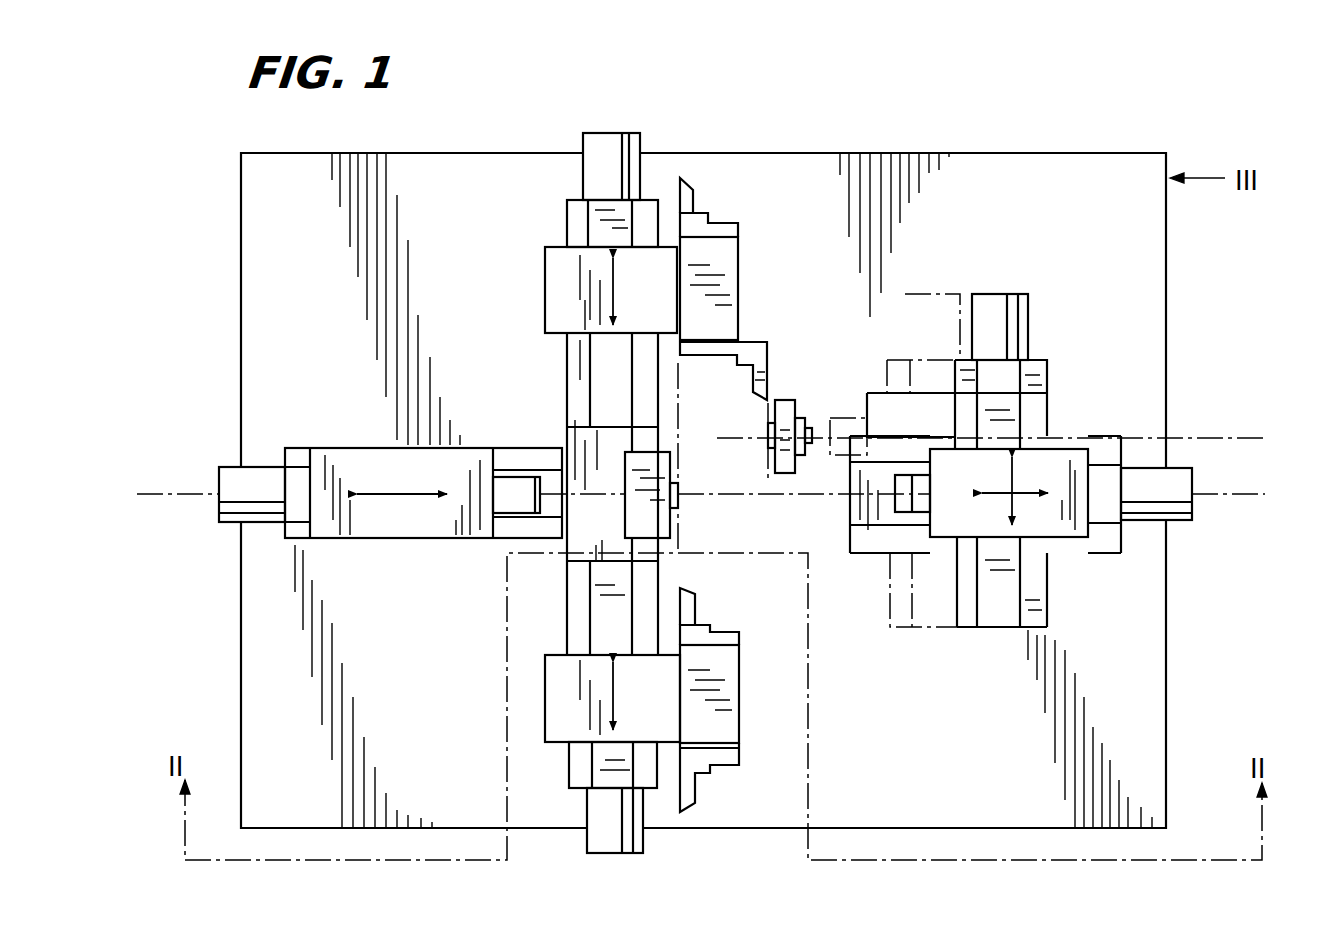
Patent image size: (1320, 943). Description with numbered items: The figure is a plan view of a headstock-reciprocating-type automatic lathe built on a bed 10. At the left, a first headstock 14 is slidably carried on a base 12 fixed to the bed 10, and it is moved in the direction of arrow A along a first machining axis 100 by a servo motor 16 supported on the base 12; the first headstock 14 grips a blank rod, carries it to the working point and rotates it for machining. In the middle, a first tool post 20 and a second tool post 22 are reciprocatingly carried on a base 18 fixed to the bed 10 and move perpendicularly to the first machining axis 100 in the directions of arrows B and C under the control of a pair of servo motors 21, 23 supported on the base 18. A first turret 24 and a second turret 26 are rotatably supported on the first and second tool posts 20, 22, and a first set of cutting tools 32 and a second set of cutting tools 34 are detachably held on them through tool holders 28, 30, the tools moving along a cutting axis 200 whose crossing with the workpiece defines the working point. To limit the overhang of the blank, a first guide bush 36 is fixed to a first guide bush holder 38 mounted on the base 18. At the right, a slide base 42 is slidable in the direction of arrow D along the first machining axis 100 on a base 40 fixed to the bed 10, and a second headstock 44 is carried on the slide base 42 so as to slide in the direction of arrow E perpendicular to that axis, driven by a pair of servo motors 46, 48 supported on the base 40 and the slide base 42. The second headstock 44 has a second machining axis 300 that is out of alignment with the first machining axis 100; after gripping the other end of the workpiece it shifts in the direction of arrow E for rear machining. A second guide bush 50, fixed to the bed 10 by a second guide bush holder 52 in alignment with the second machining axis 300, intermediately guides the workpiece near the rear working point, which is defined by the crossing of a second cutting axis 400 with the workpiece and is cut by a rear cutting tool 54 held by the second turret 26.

The bed 10 is at (1150, 715).
The base 12 is at (512, 528).
The first headstock 14 is at (385, 525).
The servo motor 16 is at (235, 508).
The base 18 is at (579, 452).
The first tool post 20 is at (560, 680).
The servo motor 21 is at (640, 843).
The second tool post 22 is at (557, 273).
The servo motor 23 is at (600, 152).
The first turret 24 is at (725, 730).
The second turret 26 is at (720, 272).
The tool holder 28 is at (735, 643).
The tool holder 30 is at (725, 225).
The first set of cutting tools 32 is at (690, 600).
The second set of cutting tools 34 is at (688, 200).
The first guide bush 36 is at (680, 485).
The first guide bush holder 38 is at (660, 523).
The base 40 is at (1107, 455).
The slide base 42 is at (1025, 625).
The second headstock 44 is at (1067, 527).
The servo motor 46 is at (1175, 486).
The servo motor 48 is at (1002, 333).
The second guide bush 50 is at (803, 420).
The second guide bush holder 52 is at (783, 405).
The rear cutting tool 54 is at (765, 368).
The first machining axis 100 is at (205, 490).
The cutting axis 200 is at (682, 367).
The second machining axis 300 is at (1140, 432).
The second cutting axis 400 is at (768, 470).